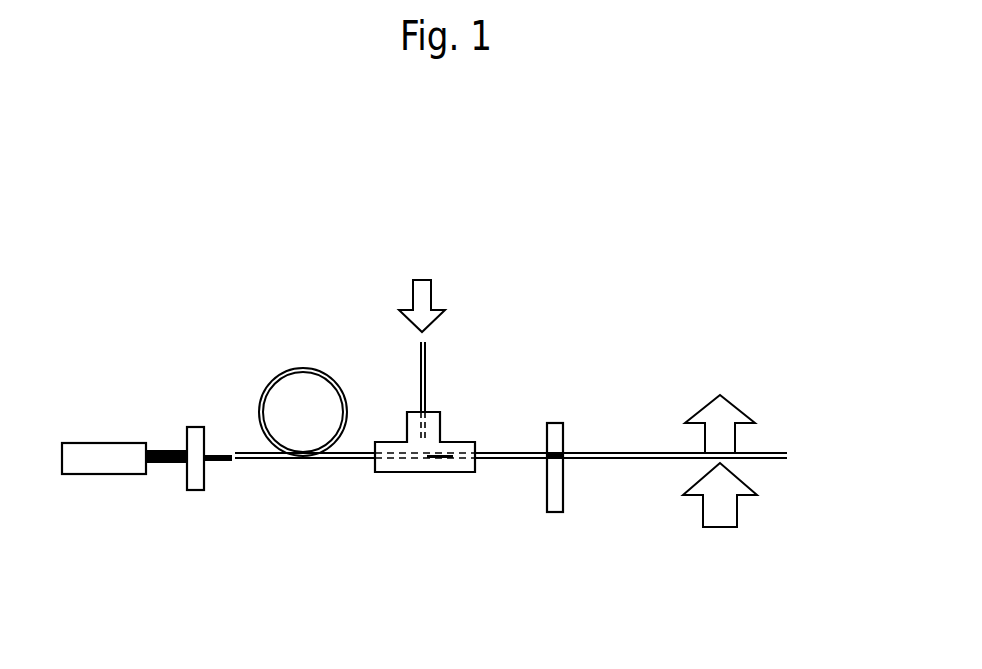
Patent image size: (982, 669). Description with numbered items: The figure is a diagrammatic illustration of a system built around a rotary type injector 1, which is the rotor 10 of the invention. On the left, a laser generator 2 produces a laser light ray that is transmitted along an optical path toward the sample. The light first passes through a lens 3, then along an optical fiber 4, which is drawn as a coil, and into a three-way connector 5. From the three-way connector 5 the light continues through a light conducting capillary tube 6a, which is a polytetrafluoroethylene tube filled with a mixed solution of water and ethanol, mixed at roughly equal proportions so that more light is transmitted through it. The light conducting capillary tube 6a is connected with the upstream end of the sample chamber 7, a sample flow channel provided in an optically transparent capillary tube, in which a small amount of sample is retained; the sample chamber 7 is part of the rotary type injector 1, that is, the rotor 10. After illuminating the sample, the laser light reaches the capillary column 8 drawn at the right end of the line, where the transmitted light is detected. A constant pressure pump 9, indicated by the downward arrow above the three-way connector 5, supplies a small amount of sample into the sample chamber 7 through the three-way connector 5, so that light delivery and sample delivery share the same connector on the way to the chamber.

The rotary type injector 1 is at (565, 413).
The laser generator 2 is at (78, 470).
The lens 3 is at (197, 488).
The optical fiber 4 is at (273, 387).
The three-way connector 5 is at (387, 472).
The light conducting capillary tube 6a is at (488, 460).
The sample chamber 7 is at (553, 462).
The capillary column 8 is at (665, 460).
The constant pressure pump 9 is at (432, 288).
The rotor 10 is at (563, 492).